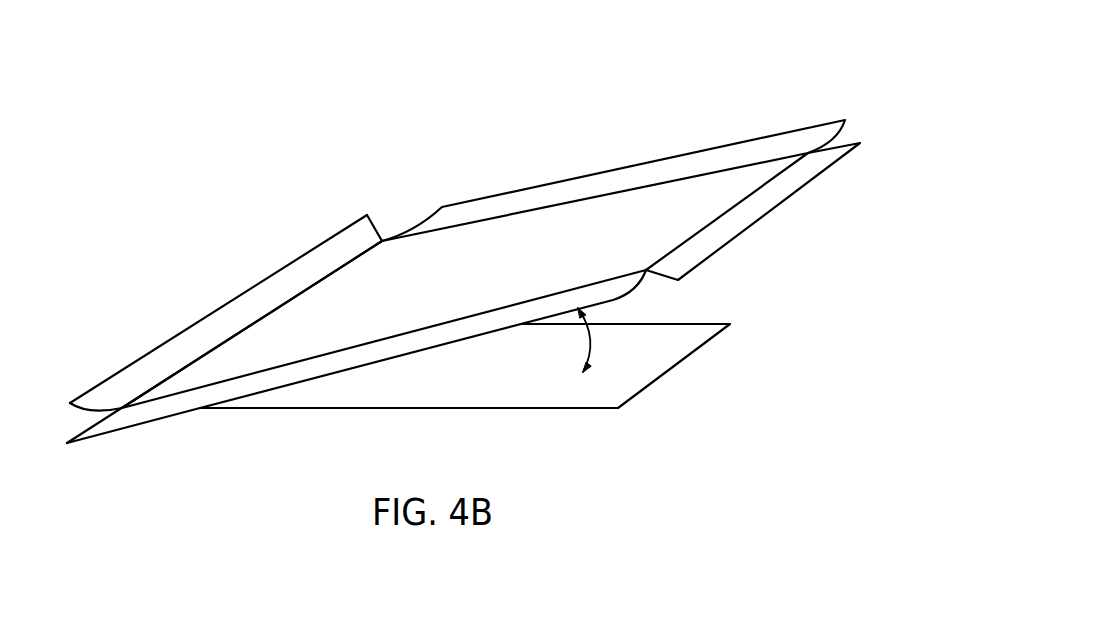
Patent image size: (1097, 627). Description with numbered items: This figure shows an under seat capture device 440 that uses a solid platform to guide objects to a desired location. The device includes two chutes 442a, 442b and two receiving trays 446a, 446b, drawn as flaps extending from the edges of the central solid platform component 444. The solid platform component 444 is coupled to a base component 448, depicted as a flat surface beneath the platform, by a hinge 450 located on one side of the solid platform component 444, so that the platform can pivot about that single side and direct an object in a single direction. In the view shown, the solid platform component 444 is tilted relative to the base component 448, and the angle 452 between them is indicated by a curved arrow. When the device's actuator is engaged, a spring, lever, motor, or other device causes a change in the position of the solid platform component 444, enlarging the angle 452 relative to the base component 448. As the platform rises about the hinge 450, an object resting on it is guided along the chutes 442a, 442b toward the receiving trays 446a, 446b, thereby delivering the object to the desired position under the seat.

The under seat capture device 440 is at (753, 98).
The chute 442a is at (596, 183).
The chute 442b is at (157, 412).
The solid platform component 444 is at (519, 260).
The receiving tray 446a is at (742, 222).
The receiving tray 446b is at (212, 323).
The base component 448 is at (600, 410).
The hinge 450 is at (112, 453).
The angle 452 is at (588, 338).